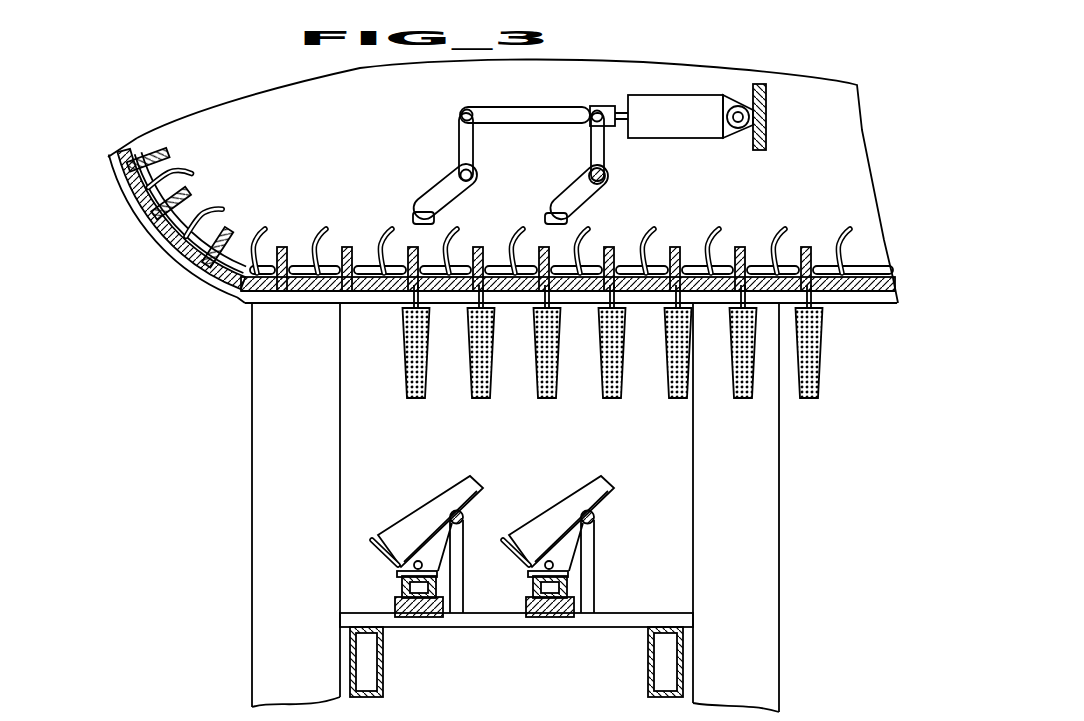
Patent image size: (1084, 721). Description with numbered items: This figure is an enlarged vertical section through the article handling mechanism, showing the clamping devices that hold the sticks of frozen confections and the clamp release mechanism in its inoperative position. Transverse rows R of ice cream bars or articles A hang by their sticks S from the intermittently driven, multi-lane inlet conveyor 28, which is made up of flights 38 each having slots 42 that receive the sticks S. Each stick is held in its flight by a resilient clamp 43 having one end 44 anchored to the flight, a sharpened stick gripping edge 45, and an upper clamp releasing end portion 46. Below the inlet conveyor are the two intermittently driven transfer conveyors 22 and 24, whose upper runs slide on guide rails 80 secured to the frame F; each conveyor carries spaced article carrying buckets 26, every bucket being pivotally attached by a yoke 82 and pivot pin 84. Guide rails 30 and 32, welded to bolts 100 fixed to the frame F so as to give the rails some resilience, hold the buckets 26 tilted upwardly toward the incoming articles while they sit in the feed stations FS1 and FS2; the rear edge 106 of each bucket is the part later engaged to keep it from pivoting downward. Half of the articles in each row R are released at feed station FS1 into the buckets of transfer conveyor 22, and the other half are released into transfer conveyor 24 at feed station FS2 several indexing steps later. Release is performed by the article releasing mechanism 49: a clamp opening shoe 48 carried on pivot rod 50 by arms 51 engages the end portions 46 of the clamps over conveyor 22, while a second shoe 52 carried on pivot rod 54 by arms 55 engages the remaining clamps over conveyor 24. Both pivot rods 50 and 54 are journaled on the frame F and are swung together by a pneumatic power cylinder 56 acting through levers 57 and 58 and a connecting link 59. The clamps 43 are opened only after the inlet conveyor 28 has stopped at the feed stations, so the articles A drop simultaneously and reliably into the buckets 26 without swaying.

The frame F is at (517, 181).
The inlet conveyor 28 is at (476, 220).
The flights 38 is at (469, 219).
The slots 42 is at (478, 307).
The resilient clamps 43 is at (467, 213).
The anchored end 44 is at (569, 311).
The sharpened stick gripping edge 45 is at (656, 247).
The upper clamp releasing end portion 46 is at (503, 218).
The sticks S is at (609, 248).
The articles A is at (613, 353).
The transverse rows R is at (613, 364).
The article releasing mechanism 49 is at (510, 148).
The connecting link 59 is at (537, 98).
The lever 58 is at (489, 147).
The pivot rod 54 is at (491, 167).
The arms 55 is at (457, 192).
The shoe 52 is at (404, 210).
The lever 57 is at (619, 147).
The pivot rod 50 is at (618, 180).
The arms 51 is at (582, 193).
The clamp opening shoe 48 is at (535, 211).
The pneumatic power cylinder 56 is at (690, 117).
The transfer conveyor 24 is at (306, 505).
The transfer conveyor 22 is at (691, 507).
The guide rails 80 is at (516, 655).
The feed station FS2 is at (424, 521).
The feed station FS1 is at (584, 517).
The article carrying buckets 26 is at (560, 516).
The guide rail 32 is at (480, 509).
The guide rail 30 is at (610, 513).
The rear edge 106 is at (368, 559).
The yoke 82 is at (517, 581).
The bolts 100 is at (519, 602).
The pivot pin 84 is at (491, 570).